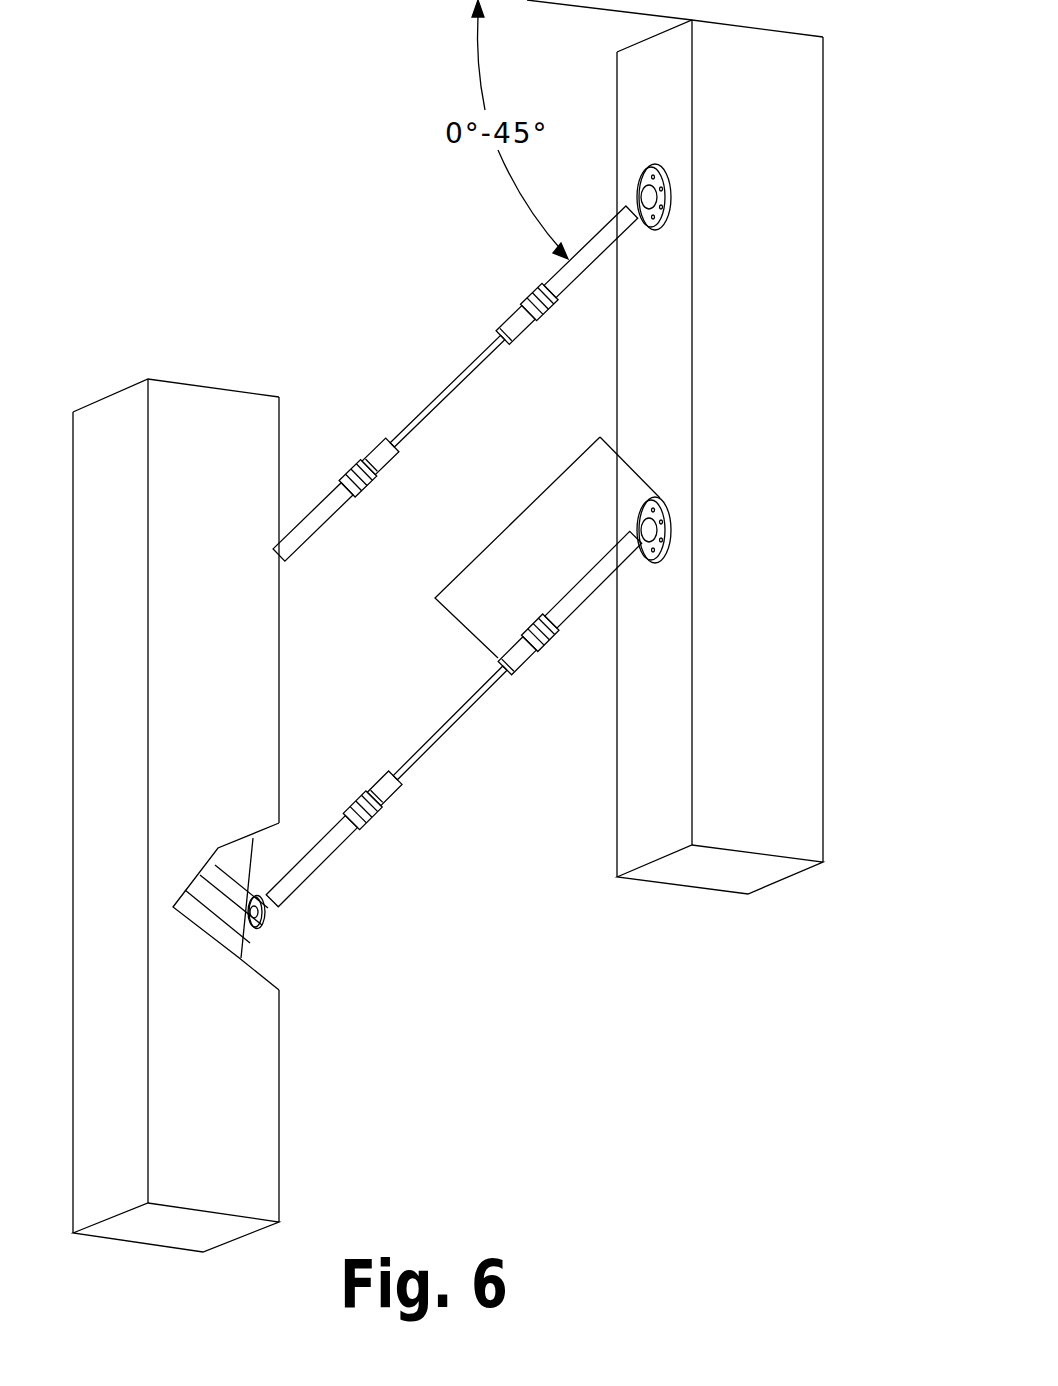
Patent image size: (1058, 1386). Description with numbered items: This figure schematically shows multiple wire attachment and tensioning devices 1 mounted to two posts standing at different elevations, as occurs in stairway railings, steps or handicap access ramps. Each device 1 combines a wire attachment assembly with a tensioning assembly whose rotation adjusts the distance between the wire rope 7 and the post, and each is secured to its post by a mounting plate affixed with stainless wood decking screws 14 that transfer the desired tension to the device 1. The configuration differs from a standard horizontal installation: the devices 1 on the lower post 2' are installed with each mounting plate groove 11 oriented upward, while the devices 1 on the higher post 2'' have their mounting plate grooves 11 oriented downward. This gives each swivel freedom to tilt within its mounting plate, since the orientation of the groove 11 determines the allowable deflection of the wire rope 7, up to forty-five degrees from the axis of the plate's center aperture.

The wire attachment and tensioning device 1 is at (463, 672).
The wire rope 7 is at (453, 722).
The groove 11 is at (582, 615).
The wood decking screws 14 is at (601, 535).
The lower post 2' is at (260, 815).
The higher post 2'' is at (675, 523).